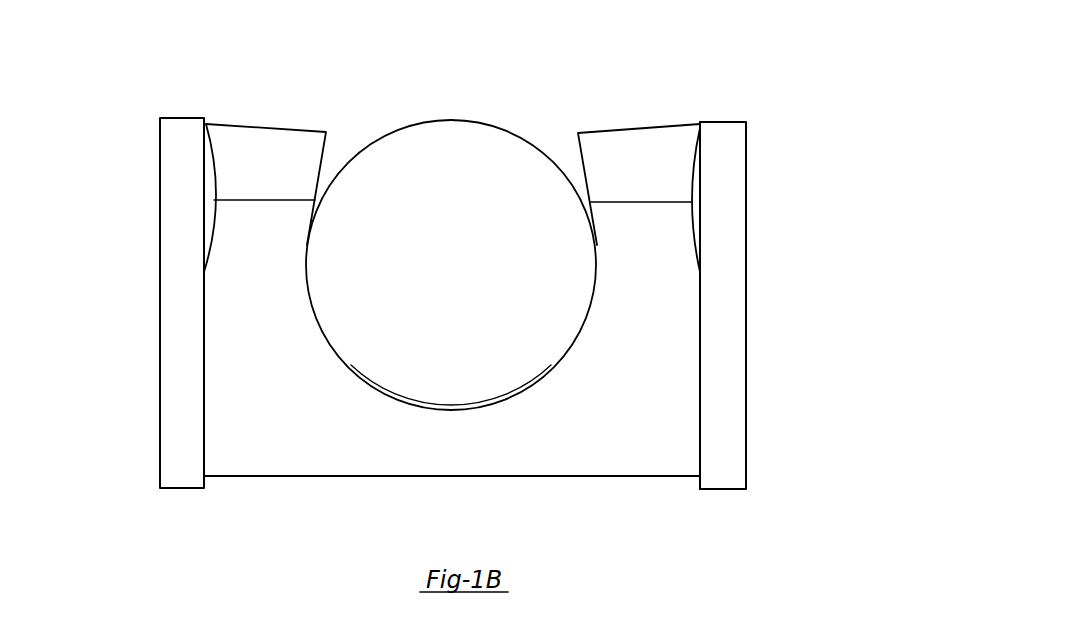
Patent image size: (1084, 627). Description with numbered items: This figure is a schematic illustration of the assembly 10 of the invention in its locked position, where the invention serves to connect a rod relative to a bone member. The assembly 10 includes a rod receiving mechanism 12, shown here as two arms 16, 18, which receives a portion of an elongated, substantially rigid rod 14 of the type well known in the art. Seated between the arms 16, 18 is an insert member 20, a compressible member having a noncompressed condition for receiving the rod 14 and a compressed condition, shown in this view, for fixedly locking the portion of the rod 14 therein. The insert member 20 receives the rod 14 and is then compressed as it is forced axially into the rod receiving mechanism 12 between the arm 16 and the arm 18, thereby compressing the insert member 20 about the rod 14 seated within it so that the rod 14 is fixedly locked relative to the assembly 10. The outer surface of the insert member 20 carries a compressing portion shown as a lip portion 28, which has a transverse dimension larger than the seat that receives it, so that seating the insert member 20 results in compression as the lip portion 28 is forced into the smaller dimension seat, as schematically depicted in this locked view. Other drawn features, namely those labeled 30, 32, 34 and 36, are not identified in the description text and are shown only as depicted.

The assembly 10 is at (778, 287).
The rod receiving mechanism 12 is at (747, 422).
The rod 14 is at (445, 120).
The arm 16 is at (728, 243).
The arm 18 is at (190, 210).
The insert member 20 is at (235, 411).
The lip portion 28 is at (694, 175).
The base plate 30 is at (525, 436).
The right wedge 32 is at (632, 217).
The left wedge 34 is at (268, 222).
The spherical surface 36 is at (582, 330).